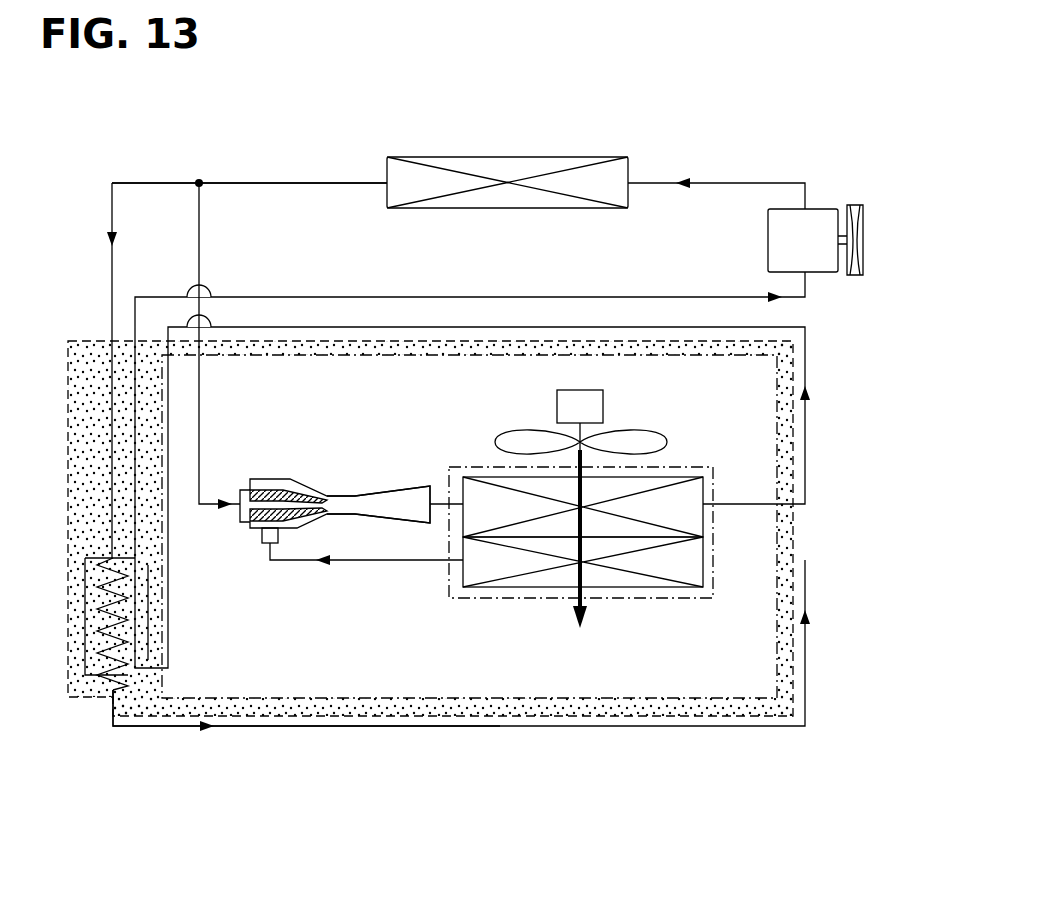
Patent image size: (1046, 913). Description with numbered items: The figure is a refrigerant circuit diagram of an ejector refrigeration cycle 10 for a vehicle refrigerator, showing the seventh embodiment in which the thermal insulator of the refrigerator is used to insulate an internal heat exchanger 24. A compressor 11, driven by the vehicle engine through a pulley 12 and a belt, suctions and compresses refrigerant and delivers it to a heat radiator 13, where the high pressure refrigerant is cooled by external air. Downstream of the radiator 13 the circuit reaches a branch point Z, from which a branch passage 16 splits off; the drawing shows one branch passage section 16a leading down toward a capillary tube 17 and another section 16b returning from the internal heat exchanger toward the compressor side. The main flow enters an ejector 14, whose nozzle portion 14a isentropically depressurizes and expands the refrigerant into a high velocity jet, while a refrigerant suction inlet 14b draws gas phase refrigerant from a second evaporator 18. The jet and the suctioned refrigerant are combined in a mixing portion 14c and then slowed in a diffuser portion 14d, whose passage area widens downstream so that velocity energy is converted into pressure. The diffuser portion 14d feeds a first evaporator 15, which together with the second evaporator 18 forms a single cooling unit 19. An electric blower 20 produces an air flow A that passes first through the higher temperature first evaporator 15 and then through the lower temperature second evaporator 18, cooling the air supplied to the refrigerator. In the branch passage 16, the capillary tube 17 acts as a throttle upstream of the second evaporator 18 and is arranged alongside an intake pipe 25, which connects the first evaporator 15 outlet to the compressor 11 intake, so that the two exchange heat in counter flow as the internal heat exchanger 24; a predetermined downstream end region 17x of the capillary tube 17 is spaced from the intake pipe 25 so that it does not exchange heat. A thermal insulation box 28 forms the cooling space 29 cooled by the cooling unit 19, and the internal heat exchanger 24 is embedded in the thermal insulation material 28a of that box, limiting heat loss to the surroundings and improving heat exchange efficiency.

The ejector refrigeration cycle 10 is at (740, 150).
The compressor 11 is at (818, 207).
The pulley 12 is at (865, 224).
The heat radiator 13 is at (523, 157).
The ejector 14 is at (328, 483).
The nozzle portion 14a is at (290, 490).
The refrigerant suction inlet 14b is at (262, 541).
The mixing portion 14c is at (340, 497).
The diffuser portion 14d is at (415, 496).
The first evaporator 15 is at (678, 495).
The branch passage 16 is at (100, 281).
The high-pressure passage 16a is at (112, 379).
The return passage 16b is at (153, 728).
The capillary tube 17 is at (97, 625).
The predetermined downstream end region 17x is at (112, 690).
The second evaporator 18 is at (648, 570).
The cooling unit 19 is at (718, 588).
The electric blower 20 is at (648, 430).
The internal heat exchanger 24 is at (72, 560).
The intake pipe 25 is at (148, 628).
The thermal insulation box 28 is at (716, 720).
The thermal insulation material 28a is at (598, 712).
The cooling space 29 is at (562, 647).
The air flow A is at (585, 604).
The branch point Z is at (199, 179).